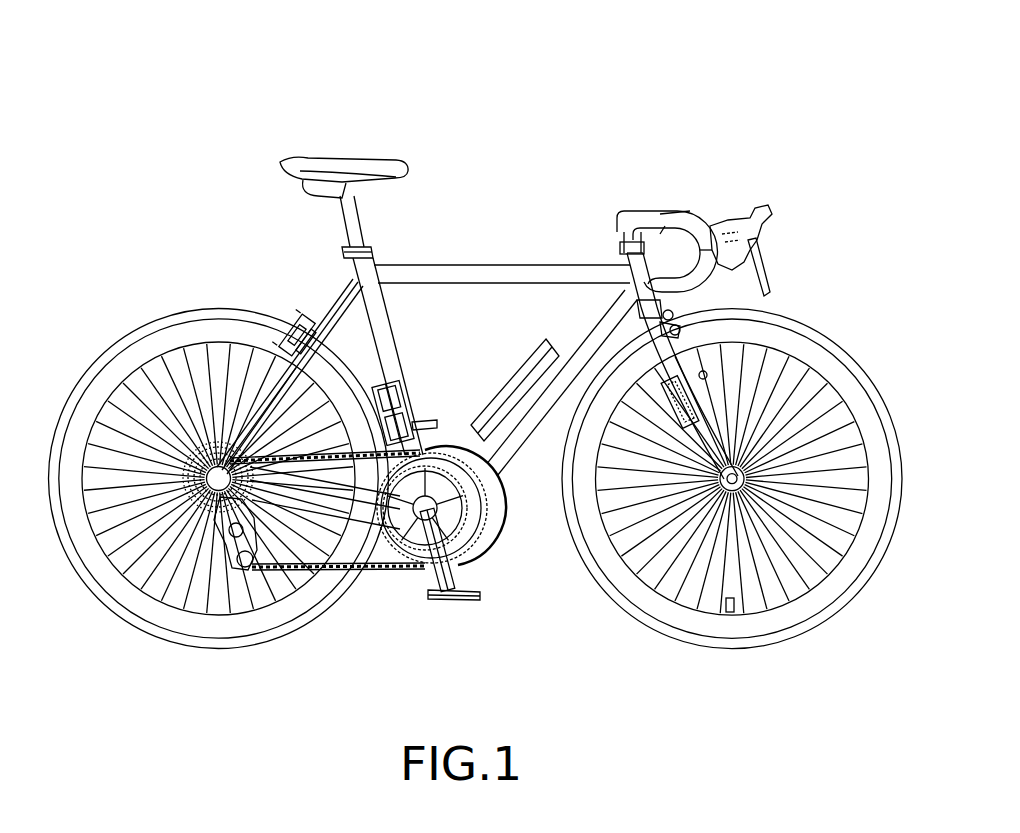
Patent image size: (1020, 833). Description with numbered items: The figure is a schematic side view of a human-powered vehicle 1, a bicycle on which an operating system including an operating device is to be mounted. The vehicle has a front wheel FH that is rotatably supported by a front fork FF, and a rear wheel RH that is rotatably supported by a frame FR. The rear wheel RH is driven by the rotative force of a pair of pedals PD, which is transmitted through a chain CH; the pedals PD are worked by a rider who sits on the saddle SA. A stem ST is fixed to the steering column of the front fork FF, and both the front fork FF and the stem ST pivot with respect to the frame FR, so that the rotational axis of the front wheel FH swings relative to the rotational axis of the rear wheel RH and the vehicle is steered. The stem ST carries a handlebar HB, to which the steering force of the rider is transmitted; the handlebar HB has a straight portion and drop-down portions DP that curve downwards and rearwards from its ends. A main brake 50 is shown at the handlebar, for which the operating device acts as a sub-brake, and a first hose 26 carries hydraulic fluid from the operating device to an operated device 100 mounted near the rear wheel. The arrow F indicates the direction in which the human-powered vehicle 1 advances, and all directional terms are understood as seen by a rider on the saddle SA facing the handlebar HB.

The human-powered vehicle 1 is at (474, 341).
The first hose 26 is at (333, 292).
The main brake 50 is at (790, 255).
The operated device 100 is at (291, 307).
The saddle SA is at (313, 160).
The stem ST is at (637, 202).
The handlebar HB is at (709, 205).
The frame FR is at (519, 264).
The front fork FF is at (628, 312).
The drop-down portion DP is at (728, 266).
The pedal PD is at (428, 421).
The rear wheel RH is at (100, 604).
The chain CH is at (392, 572).
The front wheel FH is at (814, 625).
The arrow F is at (812, 95).